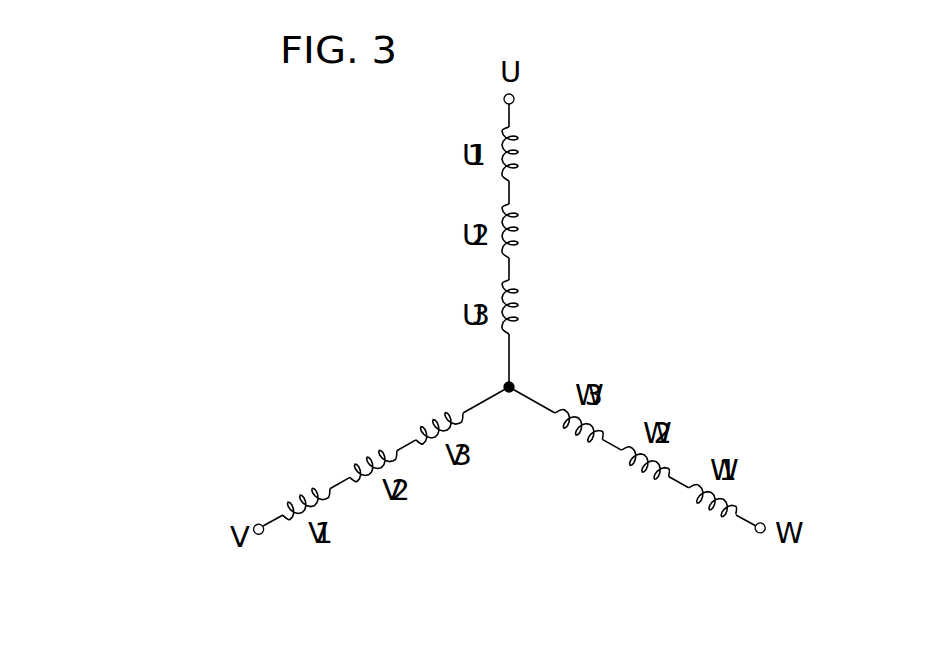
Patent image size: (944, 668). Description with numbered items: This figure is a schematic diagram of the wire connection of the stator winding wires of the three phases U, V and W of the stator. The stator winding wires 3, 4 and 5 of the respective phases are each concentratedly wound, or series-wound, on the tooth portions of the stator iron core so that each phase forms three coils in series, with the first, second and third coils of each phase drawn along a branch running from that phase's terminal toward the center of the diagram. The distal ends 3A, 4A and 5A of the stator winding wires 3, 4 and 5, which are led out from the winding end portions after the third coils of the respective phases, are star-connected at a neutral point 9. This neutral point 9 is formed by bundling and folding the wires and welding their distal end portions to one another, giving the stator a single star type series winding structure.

The stator winding wire 3 is at (512, 110).
The distal end of stator winding wire 3A is at (508, 353).
The stator winding wire 4 is at (272, 518).
The distal end of stator winding wire 4A is at (482, 408).
The stator winding wire 5 is at (747, 523).
The distal end of stator winding wire 5A is at (542, 400).
The neutral point 9 is at (505, 385).